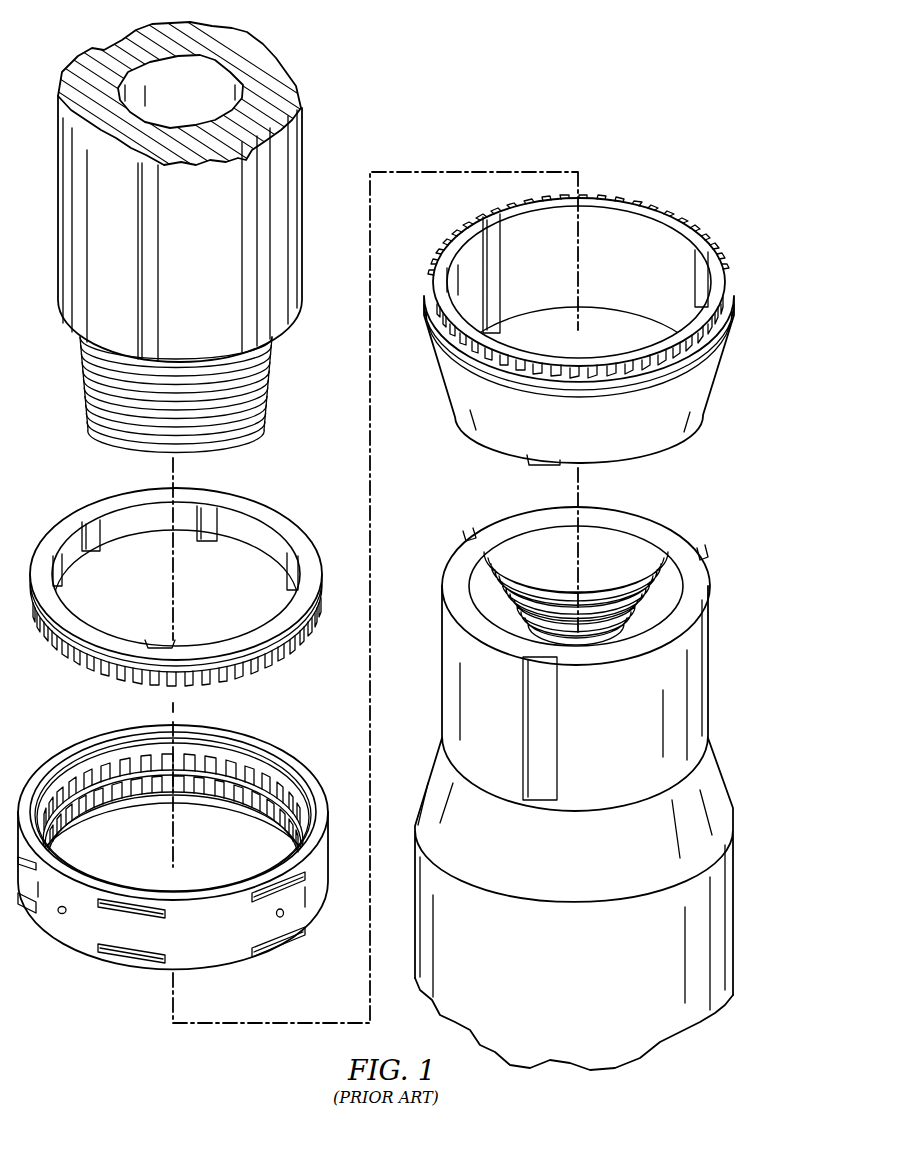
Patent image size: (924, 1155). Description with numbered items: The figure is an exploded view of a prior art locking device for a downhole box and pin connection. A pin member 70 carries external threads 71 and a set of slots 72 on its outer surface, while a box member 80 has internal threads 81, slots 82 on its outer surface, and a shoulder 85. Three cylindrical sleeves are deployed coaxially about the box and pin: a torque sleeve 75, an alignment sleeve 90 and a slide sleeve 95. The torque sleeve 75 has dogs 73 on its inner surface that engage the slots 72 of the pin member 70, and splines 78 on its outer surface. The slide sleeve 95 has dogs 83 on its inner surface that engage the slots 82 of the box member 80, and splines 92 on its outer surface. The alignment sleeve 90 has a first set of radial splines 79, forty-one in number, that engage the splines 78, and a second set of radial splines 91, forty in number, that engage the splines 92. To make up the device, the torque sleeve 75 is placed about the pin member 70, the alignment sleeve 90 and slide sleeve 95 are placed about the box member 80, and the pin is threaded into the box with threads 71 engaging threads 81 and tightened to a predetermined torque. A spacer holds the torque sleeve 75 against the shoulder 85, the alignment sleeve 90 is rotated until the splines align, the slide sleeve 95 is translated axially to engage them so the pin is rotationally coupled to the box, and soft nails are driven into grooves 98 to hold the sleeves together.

The pin member 70 is at (199, 226).
The threads 71 is at (270, 382).
The slots 72 is at (148, 210).
The dogs 73 is at (93, 553).
The torque sleeve 75 is at (185, 590).
The splines 78 is at (62, 650).
The first set of radial splines 79 is at (112, 755).
The box member 80 is at (567, 773).
The threads 81 is at (627, 556).
The slots 82 is at (500, 526).
The dogs 83 is at (498, 248).
The shoulder 85 is at (452, 585).
The alignment sleeve 90 is at (189, 849).
The second set of radial splines 91 is at (92, 805).
The splines 92 is at (458, 238).
The slide sleeve 95 is at (564, 313).
The grooves 98 is at (124, 957).